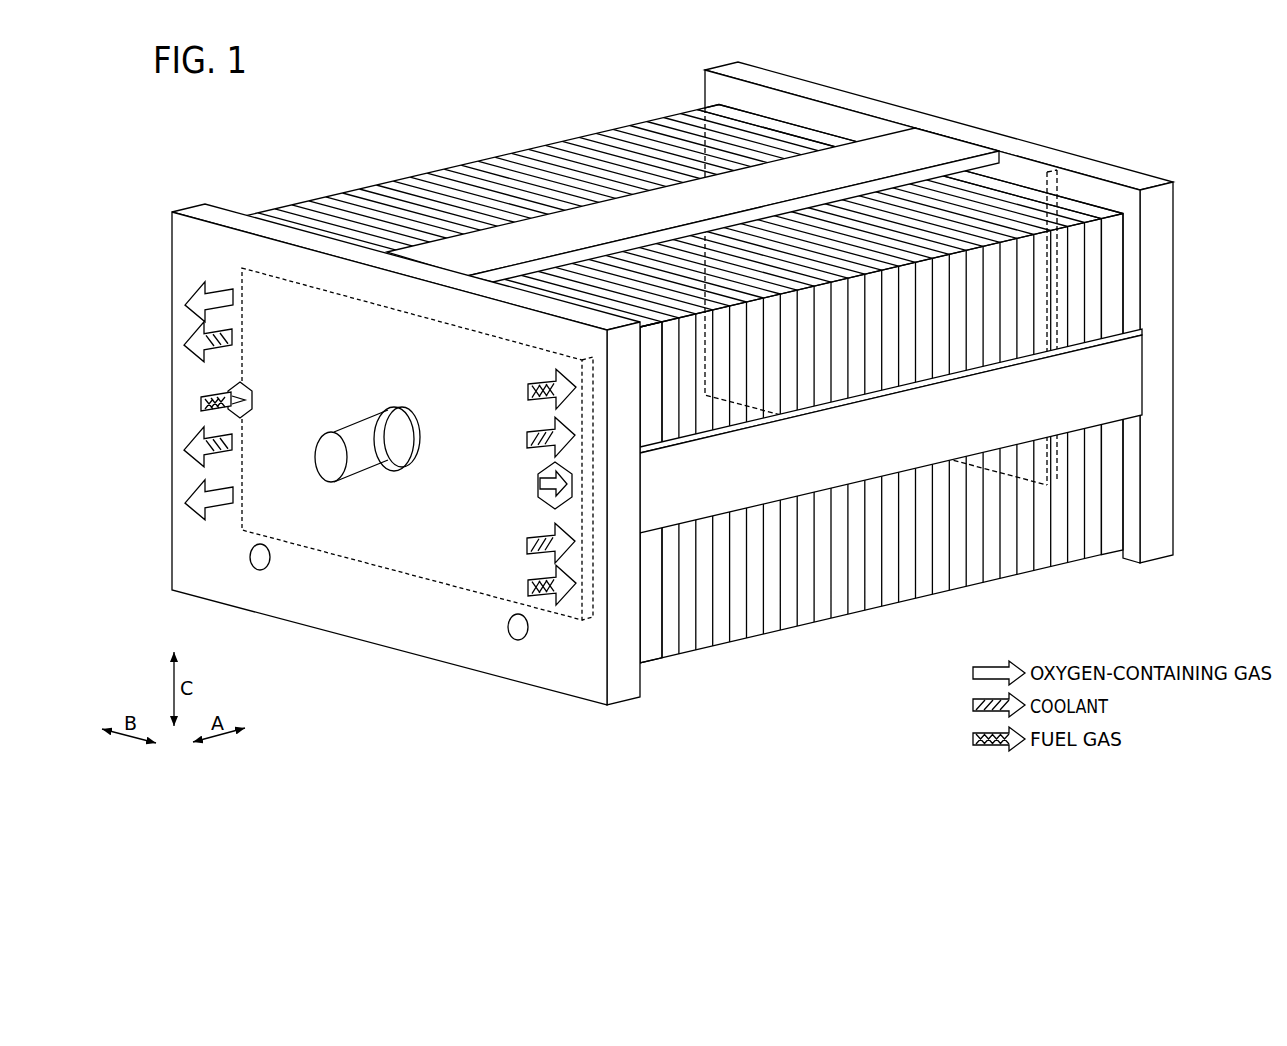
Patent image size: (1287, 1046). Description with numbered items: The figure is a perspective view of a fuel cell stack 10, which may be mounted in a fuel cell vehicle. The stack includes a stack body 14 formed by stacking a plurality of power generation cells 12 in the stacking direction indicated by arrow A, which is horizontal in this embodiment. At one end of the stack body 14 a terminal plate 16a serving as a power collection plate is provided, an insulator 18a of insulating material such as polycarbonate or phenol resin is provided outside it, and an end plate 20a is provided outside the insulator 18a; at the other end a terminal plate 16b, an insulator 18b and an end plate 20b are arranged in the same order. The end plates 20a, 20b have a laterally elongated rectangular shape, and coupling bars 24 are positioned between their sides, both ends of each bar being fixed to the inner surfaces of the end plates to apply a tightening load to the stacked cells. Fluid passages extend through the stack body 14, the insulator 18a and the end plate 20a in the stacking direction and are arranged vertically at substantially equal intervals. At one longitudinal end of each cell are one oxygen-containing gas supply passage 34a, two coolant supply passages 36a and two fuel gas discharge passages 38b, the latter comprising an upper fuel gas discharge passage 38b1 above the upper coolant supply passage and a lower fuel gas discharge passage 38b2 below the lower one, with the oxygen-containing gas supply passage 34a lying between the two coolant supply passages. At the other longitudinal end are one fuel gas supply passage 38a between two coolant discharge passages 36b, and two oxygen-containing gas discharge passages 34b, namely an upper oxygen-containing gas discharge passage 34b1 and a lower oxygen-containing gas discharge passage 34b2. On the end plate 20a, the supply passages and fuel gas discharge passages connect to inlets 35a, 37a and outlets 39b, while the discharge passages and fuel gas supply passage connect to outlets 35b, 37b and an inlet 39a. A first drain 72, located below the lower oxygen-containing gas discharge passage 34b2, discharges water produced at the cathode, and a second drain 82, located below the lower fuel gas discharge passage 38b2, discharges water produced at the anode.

The fuel cell stack 10 is at (296, 105).
The power generation cell 12 is at (495, 165).
The stack body 14 is at (733, 402).
The terminal plate 16a is at (457, 591).
The terminal plate 16b is at (1061, 296).
The insulator 18a is at (652, 641).
The insulator 18b is at (1118, 506).
The end plate 20a is at (379, 631).
The end plate 20b is at (1177, 216).
The coupling bar 24 is at (912, 137).
The oxygen-containing gas supply passage 34a is at (540, 479).
The oxygen-containing gas discharge passage 34b is at (279, 403).
The upper oxygen-containing gas discharge passage 34b1 is at (233, 301).
The lower oxygen-containing gas discharge passage 34b2 is at (233, 506).
The inlet 35a is at (567, 497).
The outlet 35b is at (206, 287).
The coolant supply passage 36a is at (499, 483).
The coolant discharge passage 36b is at (273, 404).
The inlet 37a is at (566, 422).
The outlet 37b is at (230, 350).
The fuel gas supply passage 38a is at (253, 401).
The fuel gas discharge passage 38b is at (494, 483).
The upper fuel gas discharge passage 38b1 is at (547, 376).
The lower fuel gas discharge passage 38b2 is at (549, 577).
The inlet 39a is at (236, 392).
The outlet 39b is at (563, 372).
The first drain 72 is at (258, 569).
The second drain 82 is at (518, 641).